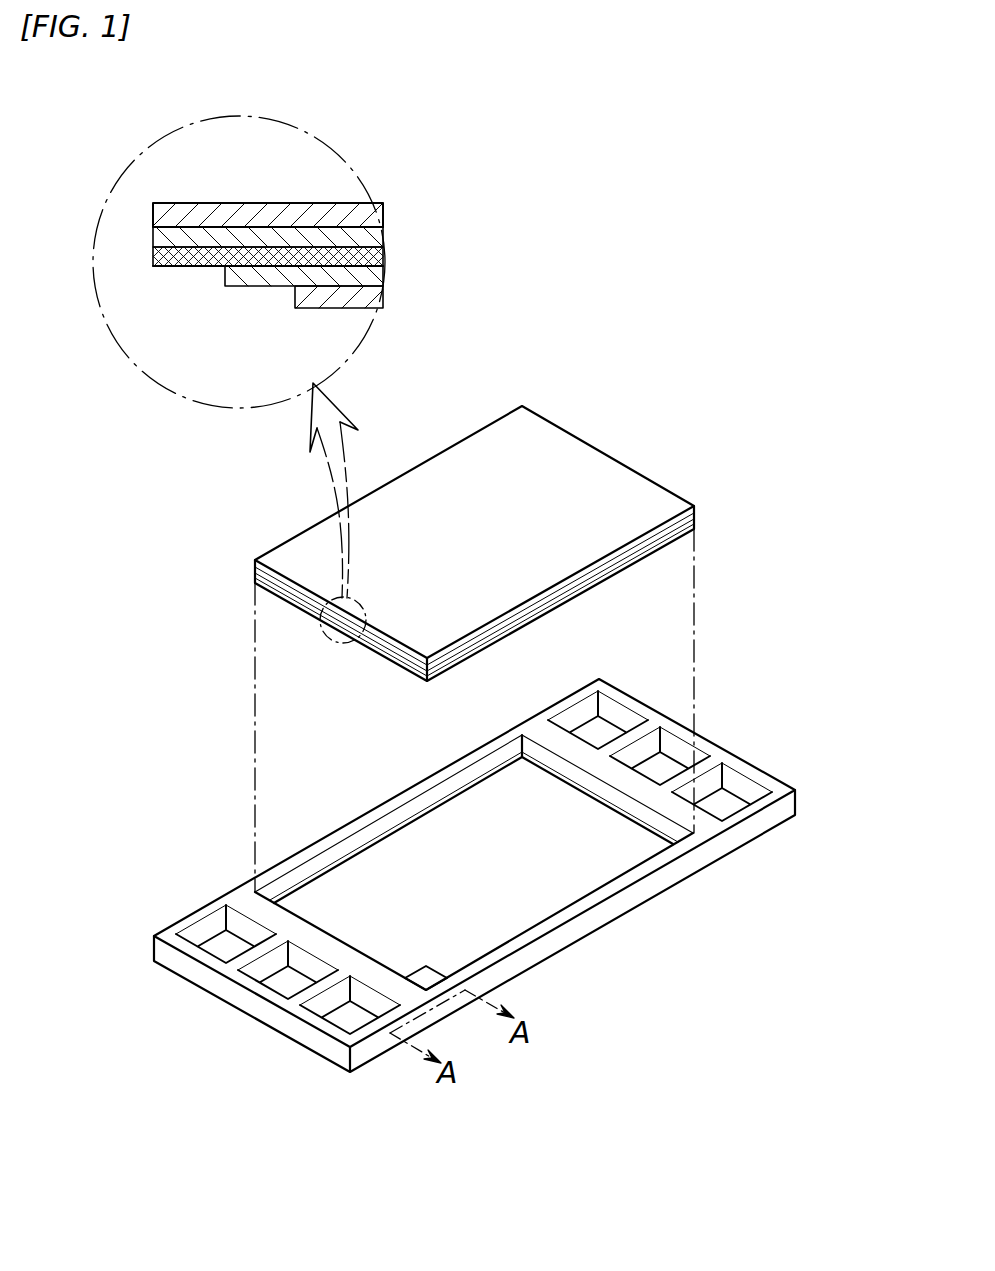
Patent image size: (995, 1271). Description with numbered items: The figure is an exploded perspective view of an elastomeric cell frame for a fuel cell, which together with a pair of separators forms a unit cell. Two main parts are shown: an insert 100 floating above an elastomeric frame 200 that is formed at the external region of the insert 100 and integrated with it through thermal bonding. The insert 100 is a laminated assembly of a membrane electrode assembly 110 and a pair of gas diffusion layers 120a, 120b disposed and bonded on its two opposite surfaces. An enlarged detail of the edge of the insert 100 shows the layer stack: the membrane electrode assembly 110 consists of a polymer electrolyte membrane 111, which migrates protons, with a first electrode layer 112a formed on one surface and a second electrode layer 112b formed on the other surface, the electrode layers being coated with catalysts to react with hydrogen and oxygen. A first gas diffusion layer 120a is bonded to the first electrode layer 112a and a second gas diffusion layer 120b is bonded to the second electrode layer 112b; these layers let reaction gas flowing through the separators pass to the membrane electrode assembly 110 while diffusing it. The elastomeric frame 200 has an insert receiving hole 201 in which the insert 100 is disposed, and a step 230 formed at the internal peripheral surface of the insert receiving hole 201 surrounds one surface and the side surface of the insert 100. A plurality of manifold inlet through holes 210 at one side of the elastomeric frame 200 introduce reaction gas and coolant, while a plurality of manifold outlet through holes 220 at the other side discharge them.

The insert 100 is at (369, 429).
The membrane electrode assembly 110 is at (256, 574).
The polymer electrolyte membrane 111 is at (374, 258).
The first electrode layer 112a is at (374, 277).
The second electrode layer 112b is at (374, 238).
The first gas diffusion layer 120a is at (256, 583).
The second gas diffusion layer 120b is at (256, 565).
The elastomeric frame 200 is at (198, 917).
The insert receiving hole 201 is at (423, 848).
The manifold inlet through holes 210 is at (289, 984).
The manifold outlet through holes 220 is at (616, 732).
The step 230 is at (350, 860).